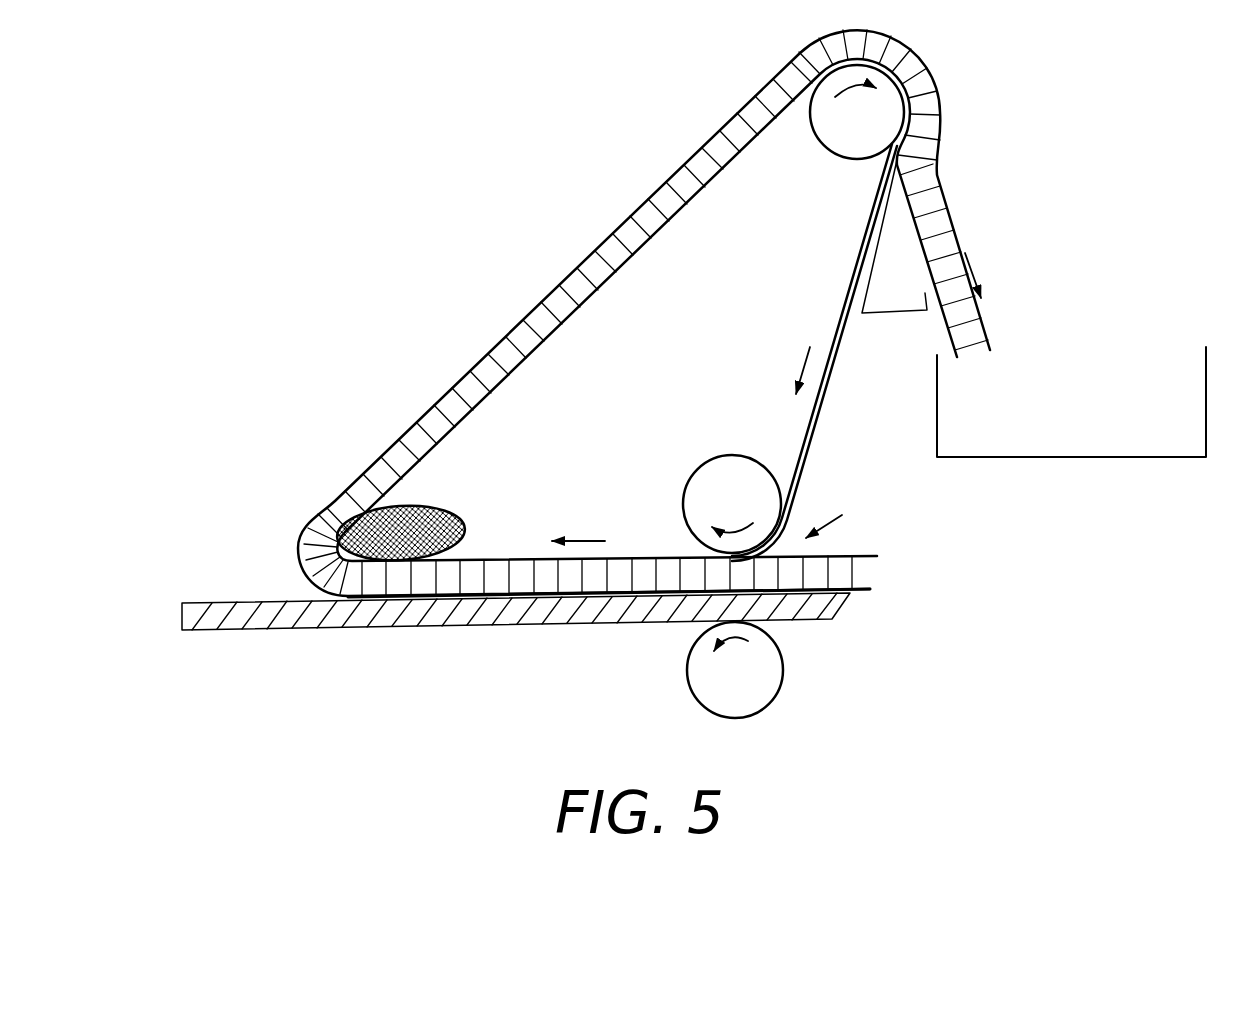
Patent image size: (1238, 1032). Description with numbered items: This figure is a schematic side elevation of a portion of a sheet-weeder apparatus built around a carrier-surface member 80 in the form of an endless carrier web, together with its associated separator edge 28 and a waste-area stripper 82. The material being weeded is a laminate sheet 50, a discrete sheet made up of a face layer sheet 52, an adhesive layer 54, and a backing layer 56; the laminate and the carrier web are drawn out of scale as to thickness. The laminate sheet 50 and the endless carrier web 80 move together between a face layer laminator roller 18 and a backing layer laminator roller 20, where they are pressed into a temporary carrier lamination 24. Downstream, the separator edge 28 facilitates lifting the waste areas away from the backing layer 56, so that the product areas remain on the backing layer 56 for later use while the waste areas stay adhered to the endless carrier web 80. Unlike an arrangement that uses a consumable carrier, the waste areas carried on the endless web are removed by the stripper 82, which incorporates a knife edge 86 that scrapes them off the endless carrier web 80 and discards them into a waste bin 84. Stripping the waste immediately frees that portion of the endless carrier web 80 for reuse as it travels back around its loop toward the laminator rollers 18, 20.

The face layer laminator roller 18 is at (700, 505).
The backing layer laminator roller 20 is at (760, 700).
The temporary carrier lamination 24 is at (481, 636).
The separator edge 28 is at (357, 555).
The laminate sheet 50 is at (847, 520).
The face layer sheet 52 is at (845, 572).
The adhesive layer 54 is at (870, 590).
The backing layer 56 is at (827, 608).
The carrier-surface member 80 is at (818, 432).
The stripper 82 is at (908, 298).
The waste bin 84 is at (1076, 443).
The knife edge 86 is at (947, 173).